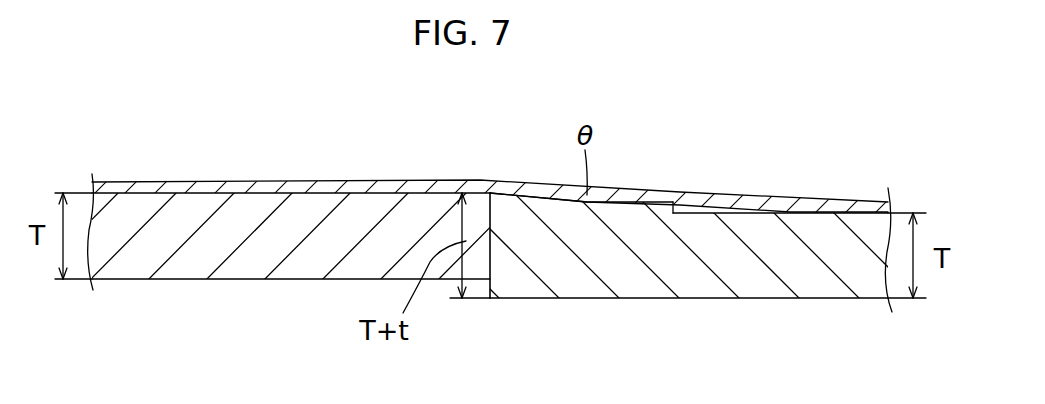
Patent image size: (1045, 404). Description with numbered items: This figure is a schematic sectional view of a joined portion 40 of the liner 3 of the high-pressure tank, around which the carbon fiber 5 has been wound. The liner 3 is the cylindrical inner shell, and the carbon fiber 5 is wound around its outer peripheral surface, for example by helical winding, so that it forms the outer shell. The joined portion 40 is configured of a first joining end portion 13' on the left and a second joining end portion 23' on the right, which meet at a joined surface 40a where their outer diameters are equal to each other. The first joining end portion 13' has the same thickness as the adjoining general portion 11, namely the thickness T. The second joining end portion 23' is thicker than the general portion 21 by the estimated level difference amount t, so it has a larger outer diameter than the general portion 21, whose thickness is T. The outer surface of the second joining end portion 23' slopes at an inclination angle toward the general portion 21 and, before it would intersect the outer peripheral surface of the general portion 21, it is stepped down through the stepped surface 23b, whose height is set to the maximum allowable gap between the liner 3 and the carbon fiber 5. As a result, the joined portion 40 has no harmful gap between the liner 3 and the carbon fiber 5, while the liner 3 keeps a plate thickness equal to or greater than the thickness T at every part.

The liner 3 is at (307, 216).
The general portion 11 is at (180, 261).
The first joining end portion 13' is at (291, 145).
The carbon fiber 5 is at (515, 185).
The stepped surface 23b is at (685, 197).
The second joining end portion 23' is at (604, 236).
The general portion 21 is at (648, 236).
The joined portion 40 is at (514, 298).
The joined surface 40a is at (490, 233).